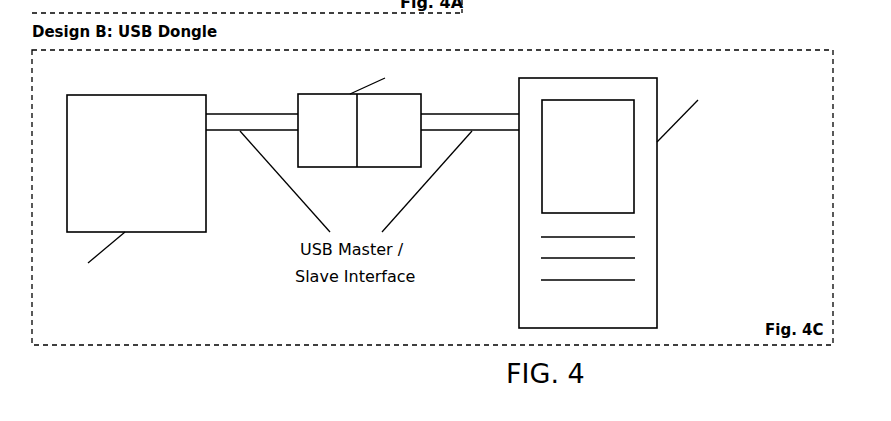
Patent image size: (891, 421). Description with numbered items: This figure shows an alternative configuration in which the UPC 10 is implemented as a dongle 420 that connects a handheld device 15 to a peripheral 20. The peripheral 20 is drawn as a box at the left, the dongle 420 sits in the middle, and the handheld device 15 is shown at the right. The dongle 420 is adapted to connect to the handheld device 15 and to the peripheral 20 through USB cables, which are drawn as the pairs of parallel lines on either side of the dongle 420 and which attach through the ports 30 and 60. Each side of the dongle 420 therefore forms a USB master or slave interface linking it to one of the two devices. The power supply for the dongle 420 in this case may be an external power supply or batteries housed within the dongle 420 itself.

The UPC 10 is at (335, 100).
The handheld device 15 is at (663, 203).
The peripheral 20 is at (93, 283).
The port 30 is at (473, 117).
The port 60 is at (252, 112).
The dongle 420 is at (343, 160).